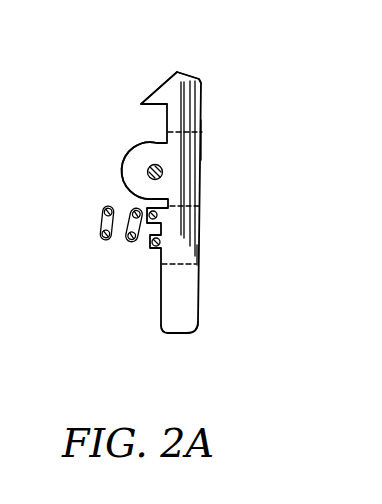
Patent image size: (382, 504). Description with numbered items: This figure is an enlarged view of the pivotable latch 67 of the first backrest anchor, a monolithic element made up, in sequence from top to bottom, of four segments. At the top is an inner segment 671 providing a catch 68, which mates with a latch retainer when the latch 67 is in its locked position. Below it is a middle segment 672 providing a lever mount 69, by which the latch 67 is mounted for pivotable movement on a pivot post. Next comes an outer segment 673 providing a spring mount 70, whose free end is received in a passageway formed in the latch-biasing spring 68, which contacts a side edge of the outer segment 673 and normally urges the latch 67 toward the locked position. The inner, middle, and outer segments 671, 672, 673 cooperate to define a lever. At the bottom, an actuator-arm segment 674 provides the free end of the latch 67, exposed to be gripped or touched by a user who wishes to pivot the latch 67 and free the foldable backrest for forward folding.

The pivotable latch 67 is at (205, 99).
The inner segment 671 is at (199, 81).
The middle segment 672 is at (199, 167).
The outer segment 673 is at (199, 248).
The actuator-arm segment 674 is at (172, 318).
The catch 68 is at (153, 102).
The lever mount 69 is at (143, 156).
The spring mount 70 is at (129, 231).